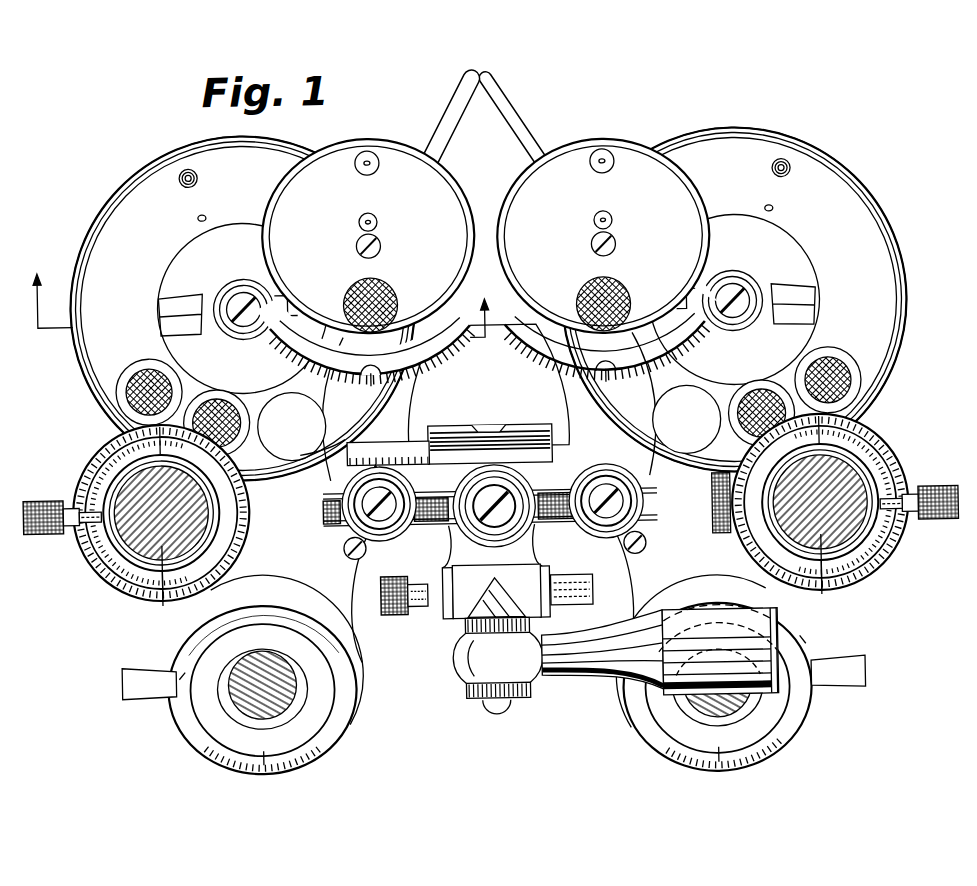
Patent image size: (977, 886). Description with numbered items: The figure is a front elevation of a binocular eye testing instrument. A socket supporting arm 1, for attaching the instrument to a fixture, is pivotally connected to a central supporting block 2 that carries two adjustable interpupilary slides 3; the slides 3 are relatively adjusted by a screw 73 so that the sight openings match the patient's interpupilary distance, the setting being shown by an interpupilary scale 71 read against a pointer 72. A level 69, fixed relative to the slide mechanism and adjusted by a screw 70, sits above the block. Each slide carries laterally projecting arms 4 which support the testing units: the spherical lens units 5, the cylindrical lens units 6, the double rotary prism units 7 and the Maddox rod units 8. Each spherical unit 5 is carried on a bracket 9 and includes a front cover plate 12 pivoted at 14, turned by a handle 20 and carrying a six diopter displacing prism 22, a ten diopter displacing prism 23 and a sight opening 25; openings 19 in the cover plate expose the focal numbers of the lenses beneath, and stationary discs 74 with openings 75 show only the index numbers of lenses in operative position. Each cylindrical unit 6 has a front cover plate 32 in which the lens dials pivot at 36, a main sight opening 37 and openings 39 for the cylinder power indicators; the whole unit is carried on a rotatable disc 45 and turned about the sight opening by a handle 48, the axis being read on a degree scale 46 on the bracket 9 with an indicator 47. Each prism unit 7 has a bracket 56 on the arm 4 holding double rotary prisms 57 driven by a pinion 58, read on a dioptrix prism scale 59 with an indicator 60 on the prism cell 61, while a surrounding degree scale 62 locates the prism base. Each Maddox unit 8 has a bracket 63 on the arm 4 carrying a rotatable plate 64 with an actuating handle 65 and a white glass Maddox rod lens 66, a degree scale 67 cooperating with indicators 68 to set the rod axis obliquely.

The socket supporting arm 1 is at (602, 672).
The central supporting block 2 is at (494, 517).
The interpupilary slides 3 is at (440, 540).
The laterally projecting arms 4 is at (402, 535).
The spherical lens units 5 is at (112, 172).
The cylindrical lens units 6 is at (366, 148).
The double rotary prism units 7 is at (88, 558).
The Maddox multiple rod units 8 is at (499, 688).
The bracket 9 is at (292, 345).
The front cover plate 12 is at (130, 195).
The pivot 14 is at (246, 288).
The openings 19 is at (175, 293).
The handle 20 is at (193, 164).
The six diopter displacing prism 22 is at (135, 388).
The ten diopter displacing prism 23 is at (217, 398).
The sight opening 25 is at (489, 423).
The front cover plate 32 is at (486, 236).
The pivot 36 is at (360, 244).
The sight opening 37 is at (352, 296).
The openings 39 is at (360, 167).
The rotatable disc 45 is at (545, 372).
The degree scale 46 is at (548, 352).
The indicator 47 is at (557, 390).
The handle 48 is at (513, 148).
The bracket 56 is at (322, 505).
The double rotary prisms 57 is at (188, 573).
The pinion 58 is at (47, 493).
The dioptrix prism scale 59 is at (106, 576).
The indicator 60 is at (205, 507).
The prism cell 61 is at (490, 507).
The degree scale 62 is at (122, 585).
The bracket 63 is at (352, 565).
The rotatable plate 64 is at (328, 686).
The actuating handle 65 is at (118, 670).
The Maddox rod lens 66 is at (296, 692).
The degree scale 67 is at (200, 740).
The indicators 68 is at (194, 641).
The level 69 is at (548, 435).
The screw 70 is at (383, 614).
The interpupilary scale 71 is at (318, 437).
The pointer 72 is at (333, 498).
The screw 73 is at (720, 477).
The stationary discs 74 is at (230, 280).
The openings 75 is at (186, 291).